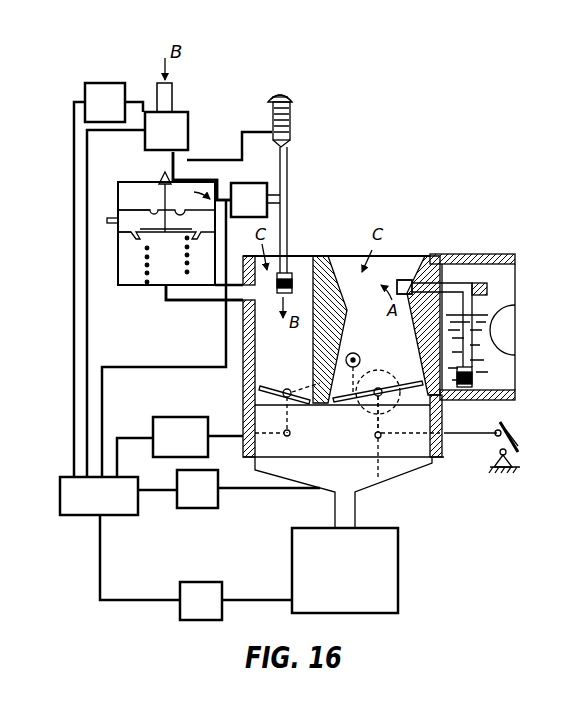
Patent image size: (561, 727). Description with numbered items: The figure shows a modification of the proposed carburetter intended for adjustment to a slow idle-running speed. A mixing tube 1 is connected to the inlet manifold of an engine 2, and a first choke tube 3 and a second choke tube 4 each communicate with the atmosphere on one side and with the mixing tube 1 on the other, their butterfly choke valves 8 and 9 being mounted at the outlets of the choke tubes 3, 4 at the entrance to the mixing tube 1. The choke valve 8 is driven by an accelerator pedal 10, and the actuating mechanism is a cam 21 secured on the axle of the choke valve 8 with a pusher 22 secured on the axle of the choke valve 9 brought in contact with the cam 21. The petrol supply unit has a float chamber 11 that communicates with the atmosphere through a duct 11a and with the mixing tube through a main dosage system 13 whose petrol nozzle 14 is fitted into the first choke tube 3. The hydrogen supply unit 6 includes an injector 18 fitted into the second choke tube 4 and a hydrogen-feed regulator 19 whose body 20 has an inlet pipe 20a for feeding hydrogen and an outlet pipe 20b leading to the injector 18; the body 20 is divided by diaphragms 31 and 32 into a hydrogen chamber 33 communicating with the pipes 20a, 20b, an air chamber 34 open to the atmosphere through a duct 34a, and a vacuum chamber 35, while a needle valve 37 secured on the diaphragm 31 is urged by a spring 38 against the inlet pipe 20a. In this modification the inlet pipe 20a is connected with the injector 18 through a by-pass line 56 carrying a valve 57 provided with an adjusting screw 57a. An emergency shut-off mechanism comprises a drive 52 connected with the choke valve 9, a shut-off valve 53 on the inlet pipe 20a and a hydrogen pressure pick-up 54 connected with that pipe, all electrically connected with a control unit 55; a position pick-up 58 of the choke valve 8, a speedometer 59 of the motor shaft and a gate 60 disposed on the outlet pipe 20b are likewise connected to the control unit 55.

The mixing tube 1 is at (446, 440).
The engine 2 is at (345, 570).
The first choke tube 3 is at (430, 251).
The second choke tube 4 is at (311, 252).
The hydrogen supply unit 6 is at (296, 197).
The choke valve 8 is at (410, 398).
The choke valve 9 is at (284, 389).
The accelerator pedal 10 is at (515, 438).
The float chamber 11 is at (505, 402).
The duct 11a is at (502, 258).
The main dosage system 13 is at (462, 300).
The petrol nozzle 14 is at (410, 282).
The injector 18 is at (276, 297).
The hydrogen-feed regulator 19 is at (146, 299).
The body 20 is at (118, 249).
The inlet pipe 20a is at (168, 96).
The outlet pipe 20b is at (222, 194).
The cam 21 is at (393, 380).
The pusher 22 is at (354, 352).
The diaphragm 31 is at (140, 210).
The diaphragm 32 is at (135, 240).
The hydrogen chamber 33 is at (117, 187).
The air chamber 34 is at (117, 208).
The duct 34a is at (108, 221).
The vacuum chamber 35 is at (125, 286).
The needle valve 37 is at (163, 205).
The spring 38 is at (150, 247).
The drive 52 is at (180, 437).
The shut-off valve 53 is at (166, 131).
The hydrogen pressure pick-up 54 is at (105, 102).
The control unit 55 is at (99, 496).
The by-pass line 56 is at (257, 131).
The valve 57 is at (291, 130).
The adjusting screw 57a is at (290, 106).
The position pick-up 58 is at (197, 489).
The speedometer 59 is at (201, 601).
The gate 60 is at (249, 200).